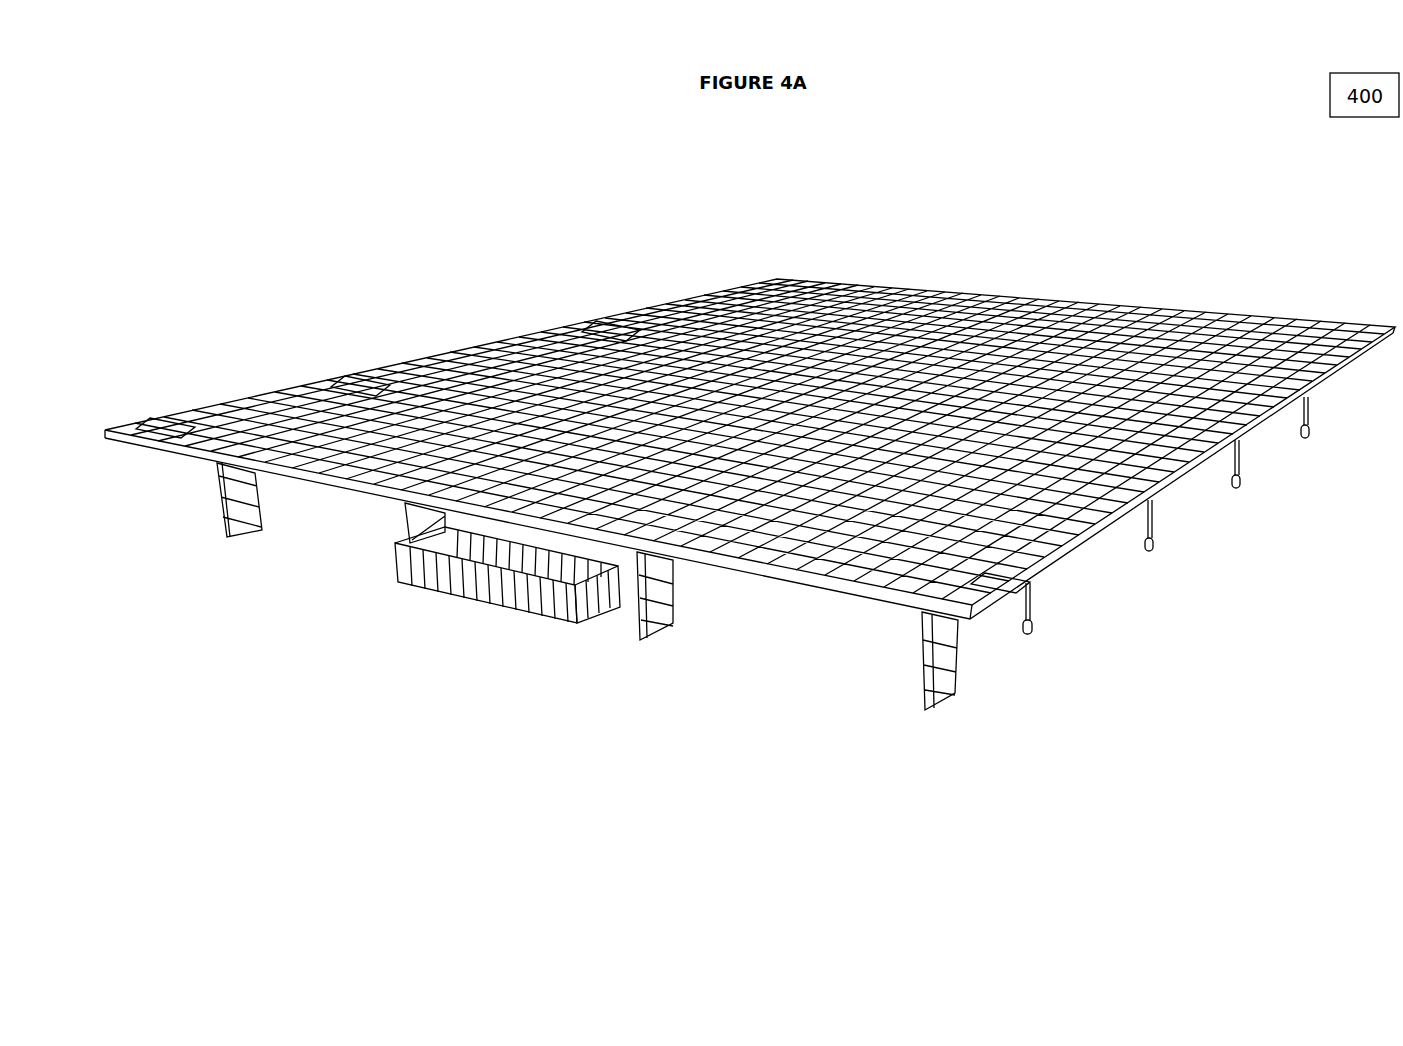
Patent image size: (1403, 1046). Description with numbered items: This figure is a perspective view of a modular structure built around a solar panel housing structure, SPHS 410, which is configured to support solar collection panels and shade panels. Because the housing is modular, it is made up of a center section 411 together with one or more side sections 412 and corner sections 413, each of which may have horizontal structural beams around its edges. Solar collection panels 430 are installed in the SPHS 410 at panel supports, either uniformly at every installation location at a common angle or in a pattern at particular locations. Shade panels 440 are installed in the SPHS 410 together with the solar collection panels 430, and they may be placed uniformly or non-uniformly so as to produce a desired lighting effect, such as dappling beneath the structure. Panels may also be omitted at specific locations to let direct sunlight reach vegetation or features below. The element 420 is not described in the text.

The solar panel housing structure (SPHS) 410 is at (698, 555).
The center section 411 is at (612, 318).
The side section 412 is at (360, 372).
The corner section 413 is at (162, 413).
The anchor tether 420 is at (1155, 516).
The solar collection panel 430 is at (592, 487).
The shade panel 440 is at (1123, 310).